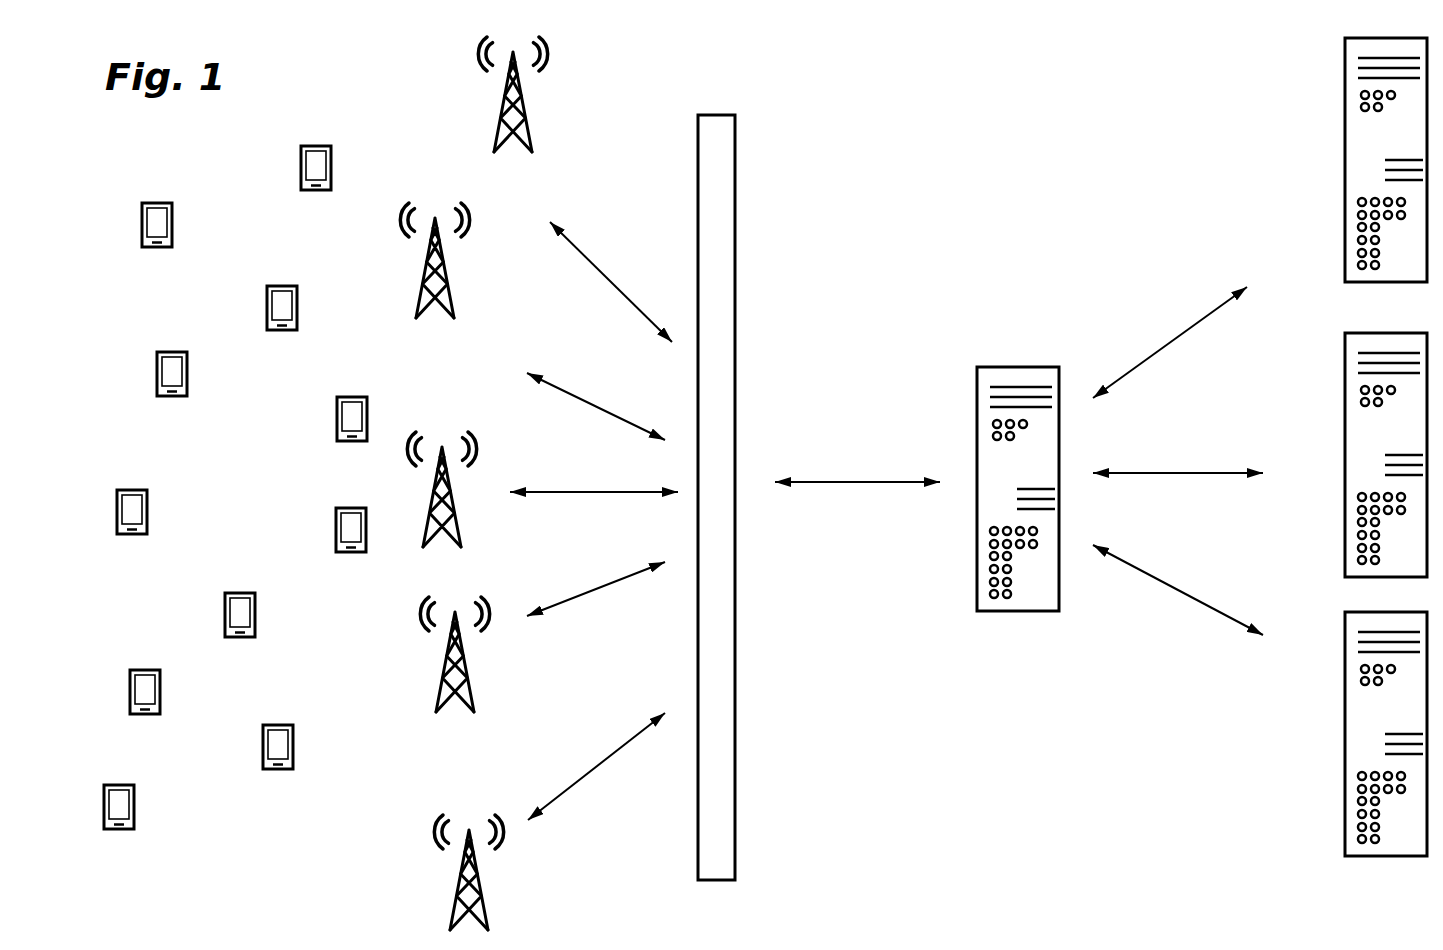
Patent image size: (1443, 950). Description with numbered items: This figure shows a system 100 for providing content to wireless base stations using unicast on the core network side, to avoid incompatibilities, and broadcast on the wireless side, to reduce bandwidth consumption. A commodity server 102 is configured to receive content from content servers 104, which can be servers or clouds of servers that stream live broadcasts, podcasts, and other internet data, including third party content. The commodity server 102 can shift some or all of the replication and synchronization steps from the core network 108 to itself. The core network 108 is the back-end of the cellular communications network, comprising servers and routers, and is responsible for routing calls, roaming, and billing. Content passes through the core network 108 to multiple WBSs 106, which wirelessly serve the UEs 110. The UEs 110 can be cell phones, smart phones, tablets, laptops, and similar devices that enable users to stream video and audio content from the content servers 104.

The system 100 is at (908, 105).
The commodity server 102 is at (988, 366).
The content servers 104 is at (1345, 175).
The WBSs 106 is at (530, 147).
The core network 108 is at (735, 802).
The user equipment 110 is at (301, 165).